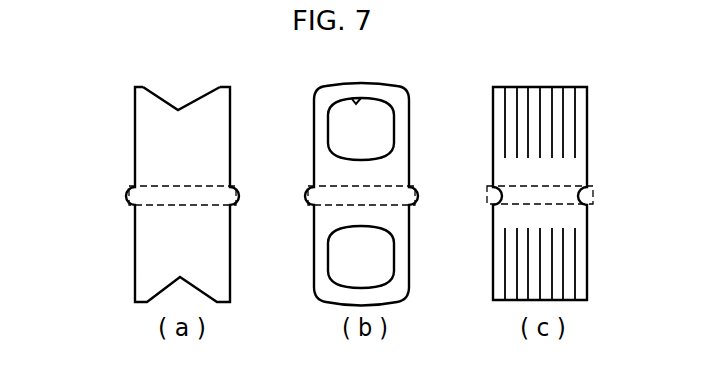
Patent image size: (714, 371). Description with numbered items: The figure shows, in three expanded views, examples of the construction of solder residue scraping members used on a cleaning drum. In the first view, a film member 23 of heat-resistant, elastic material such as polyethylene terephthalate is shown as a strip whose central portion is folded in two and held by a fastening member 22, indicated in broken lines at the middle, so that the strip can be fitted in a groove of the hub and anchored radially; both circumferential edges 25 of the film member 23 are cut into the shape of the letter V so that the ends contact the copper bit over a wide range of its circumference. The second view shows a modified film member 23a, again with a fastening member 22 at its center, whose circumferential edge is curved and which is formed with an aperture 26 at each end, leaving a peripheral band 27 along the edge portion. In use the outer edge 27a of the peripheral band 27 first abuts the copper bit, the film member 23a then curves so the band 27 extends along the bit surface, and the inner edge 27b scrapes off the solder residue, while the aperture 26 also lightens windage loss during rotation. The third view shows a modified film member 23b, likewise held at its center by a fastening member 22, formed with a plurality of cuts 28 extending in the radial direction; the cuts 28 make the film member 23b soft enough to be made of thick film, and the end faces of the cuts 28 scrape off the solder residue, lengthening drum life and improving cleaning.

The fastening member 22 is at (128, 190).
The film member 23 is at (131, 108).
The circumferential edge 25 is at (180, 108).
The modified film member 23a is at (311, 134).
The aperture 26 is at (381, 125).
The peripheral band 27 is at (322, 97).
The outer edge 27a is at (377, 84).
The inner edge 27b is at (352, 102).
The modified film member 23b is at (491, 139).
The cut 28 is at (576, 101).